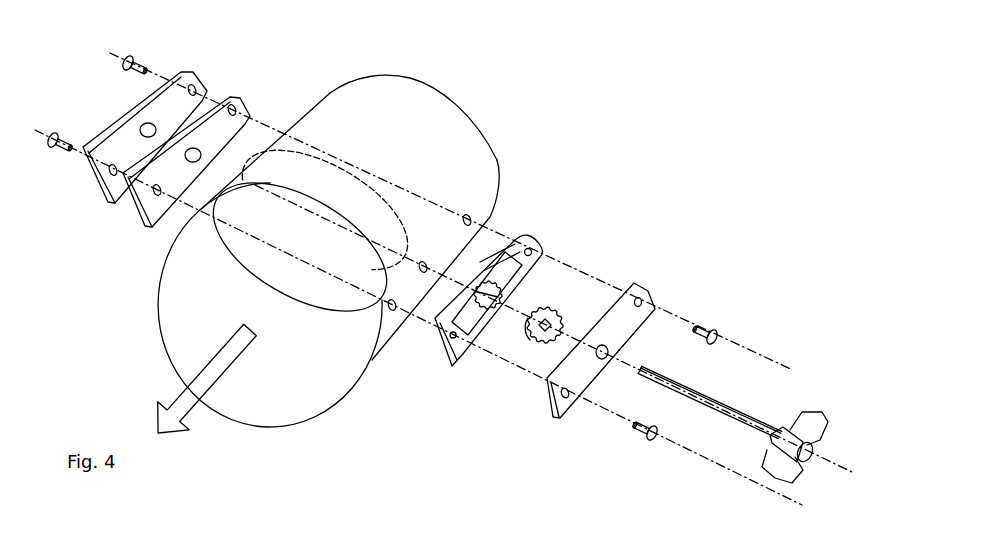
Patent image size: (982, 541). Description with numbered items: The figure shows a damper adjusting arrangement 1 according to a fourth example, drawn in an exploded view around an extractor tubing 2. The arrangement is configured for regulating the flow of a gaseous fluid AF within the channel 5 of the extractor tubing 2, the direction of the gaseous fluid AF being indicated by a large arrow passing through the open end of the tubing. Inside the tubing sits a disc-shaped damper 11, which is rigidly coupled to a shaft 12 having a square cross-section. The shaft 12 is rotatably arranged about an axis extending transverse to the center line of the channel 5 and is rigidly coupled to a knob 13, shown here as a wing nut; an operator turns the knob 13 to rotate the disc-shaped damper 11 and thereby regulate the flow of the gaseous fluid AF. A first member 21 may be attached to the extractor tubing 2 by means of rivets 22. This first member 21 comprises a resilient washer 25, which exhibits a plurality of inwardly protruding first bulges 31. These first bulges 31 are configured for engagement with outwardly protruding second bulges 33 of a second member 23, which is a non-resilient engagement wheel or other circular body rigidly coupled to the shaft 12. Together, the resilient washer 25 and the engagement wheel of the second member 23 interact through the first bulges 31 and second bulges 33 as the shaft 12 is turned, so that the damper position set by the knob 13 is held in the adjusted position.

The damper adjusting arrangement 1 is at (591, 55).
The extractor tubing 2 is at (498, 160).
The channel 5 is at (217, 313).
The disc-shaped damper 11 is at (332, 313).
The shaft 12 is at (753, 417).
The knob 13 is at (788, 477).
The first member 21 is at (577, 227).
The rivets 22 is at (707, 328).
The second member 23 is at (603, 277).
The resilient washer 25 is at (458, 363).
The first bulges 31 is at (470, 259).
The second bulges 33 is at (521, 243).
The gaseous fluid AF is at (252, 352).